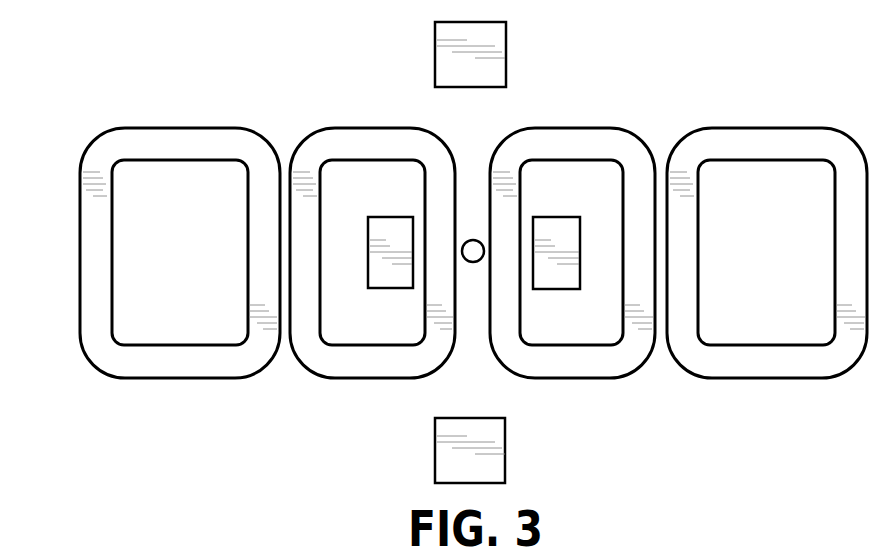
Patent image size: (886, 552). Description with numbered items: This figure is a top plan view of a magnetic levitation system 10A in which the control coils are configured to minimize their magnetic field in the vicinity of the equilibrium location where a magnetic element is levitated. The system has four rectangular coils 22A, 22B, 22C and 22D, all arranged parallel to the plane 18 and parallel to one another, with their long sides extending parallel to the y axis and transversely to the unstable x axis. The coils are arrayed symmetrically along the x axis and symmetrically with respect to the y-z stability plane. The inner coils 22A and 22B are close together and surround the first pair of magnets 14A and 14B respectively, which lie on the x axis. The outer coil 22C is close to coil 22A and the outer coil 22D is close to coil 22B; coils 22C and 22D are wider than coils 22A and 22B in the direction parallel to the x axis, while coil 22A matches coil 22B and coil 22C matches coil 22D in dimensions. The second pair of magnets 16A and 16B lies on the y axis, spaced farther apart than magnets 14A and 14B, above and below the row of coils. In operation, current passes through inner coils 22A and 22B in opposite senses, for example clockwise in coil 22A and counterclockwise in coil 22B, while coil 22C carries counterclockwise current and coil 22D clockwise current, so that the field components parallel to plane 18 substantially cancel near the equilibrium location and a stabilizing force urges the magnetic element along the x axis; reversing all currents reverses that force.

The magnetic levitation system 10A is at (95, 70).
The plane 18 is at (41, 268).
The coil 22C is at (201, 128).
The coil 22A is at (339, 128).
The coil 22B is at (606, 128).
The coil 22D is at (786, 128).
The magnet 14A is at (392, 217).
The magnet 14B is at (572, 198).
The magnet 16A is at (435, 50).
The magnet 16B is at (435, 447).